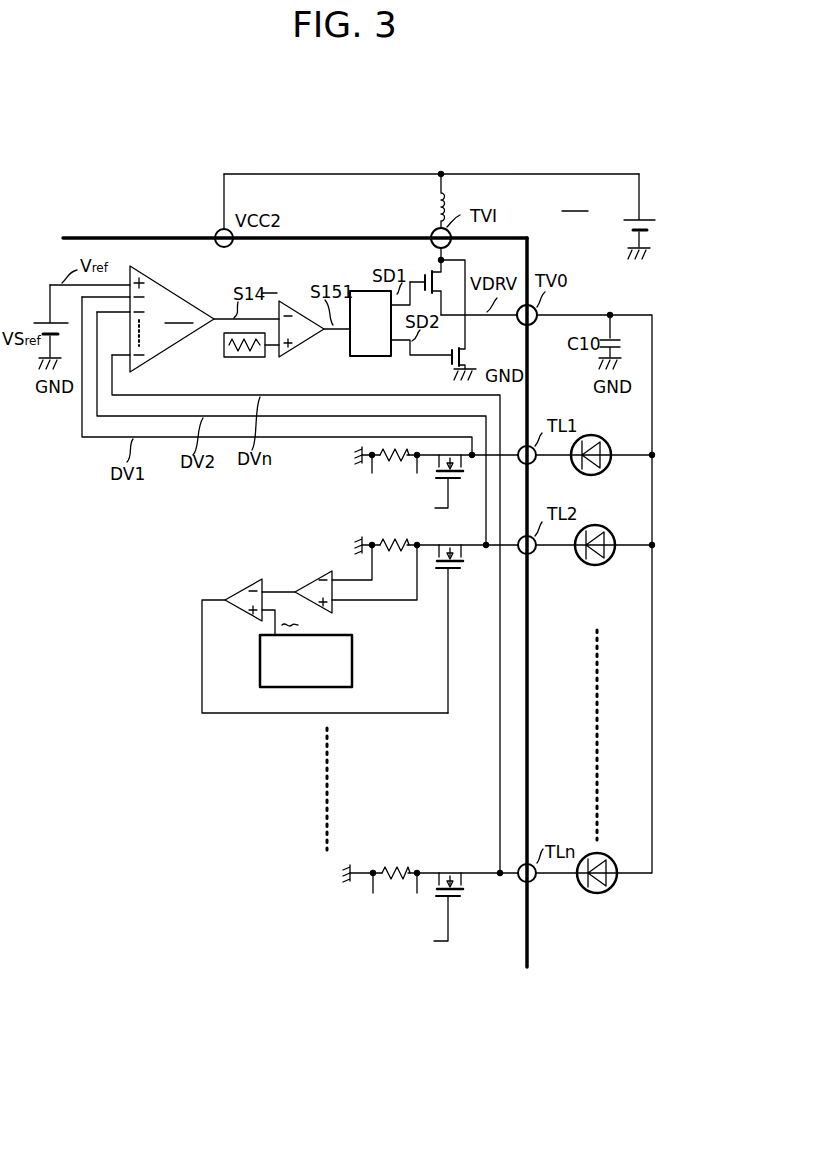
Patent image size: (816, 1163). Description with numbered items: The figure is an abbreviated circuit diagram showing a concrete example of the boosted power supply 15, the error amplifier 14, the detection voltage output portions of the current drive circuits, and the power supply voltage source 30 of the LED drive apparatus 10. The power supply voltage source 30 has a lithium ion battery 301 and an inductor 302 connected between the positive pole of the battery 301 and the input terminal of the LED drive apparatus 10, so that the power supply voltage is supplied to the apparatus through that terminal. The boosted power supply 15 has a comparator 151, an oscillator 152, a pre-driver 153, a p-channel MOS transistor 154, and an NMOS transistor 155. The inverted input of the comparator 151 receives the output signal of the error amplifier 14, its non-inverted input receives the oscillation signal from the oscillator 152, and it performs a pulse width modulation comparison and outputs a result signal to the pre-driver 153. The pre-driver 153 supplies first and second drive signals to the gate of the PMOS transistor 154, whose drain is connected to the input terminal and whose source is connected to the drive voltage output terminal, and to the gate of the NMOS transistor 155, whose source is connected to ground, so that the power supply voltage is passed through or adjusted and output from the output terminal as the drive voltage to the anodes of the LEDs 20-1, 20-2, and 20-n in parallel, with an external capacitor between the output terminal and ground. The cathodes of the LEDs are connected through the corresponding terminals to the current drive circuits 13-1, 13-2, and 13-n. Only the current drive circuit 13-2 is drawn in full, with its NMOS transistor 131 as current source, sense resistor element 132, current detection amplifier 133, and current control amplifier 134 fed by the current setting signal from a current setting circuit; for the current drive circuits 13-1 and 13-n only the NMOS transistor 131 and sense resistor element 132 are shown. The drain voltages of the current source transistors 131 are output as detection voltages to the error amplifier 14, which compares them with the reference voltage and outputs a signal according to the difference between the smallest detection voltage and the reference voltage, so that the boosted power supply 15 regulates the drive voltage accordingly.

The LED drive apparatus 10 is at (152, 235).
The error amplifier 14 is at (172, 289).
The boosted power supply 15 is at (360, 266).
The power supply voltage source 30 is at (577, 199).
The lithium ion battery 301 is at (657, 230).
The inductor 302 is at (434, 201).
The comparator 151 is at (305, 346).
The oscillator 152 is at (245, 358).
The pre-driver 153 is at (368, 358).
The p-channel MOS transistor 154 is at (432, 272).
The NMOS transistor 155 is at (448, 365).
The NMOS transistor 131 is at (465, 480).
The sense resistor element 132 is at (395, 462).
The current detection amplifier 133 is at (303, 585).
The current control amplifier 134 is at (240, 587).
The current drive circuit 13-1 is at (351, 491).
The current drive circuit 13-2 is at (360, 623).
The current drive circuit 13-n is at (367, 912).
The LED 20-1 is at (588, 476).
The LED 20-2 is at (595, 567).
The LED 20-n is at (585, 895).